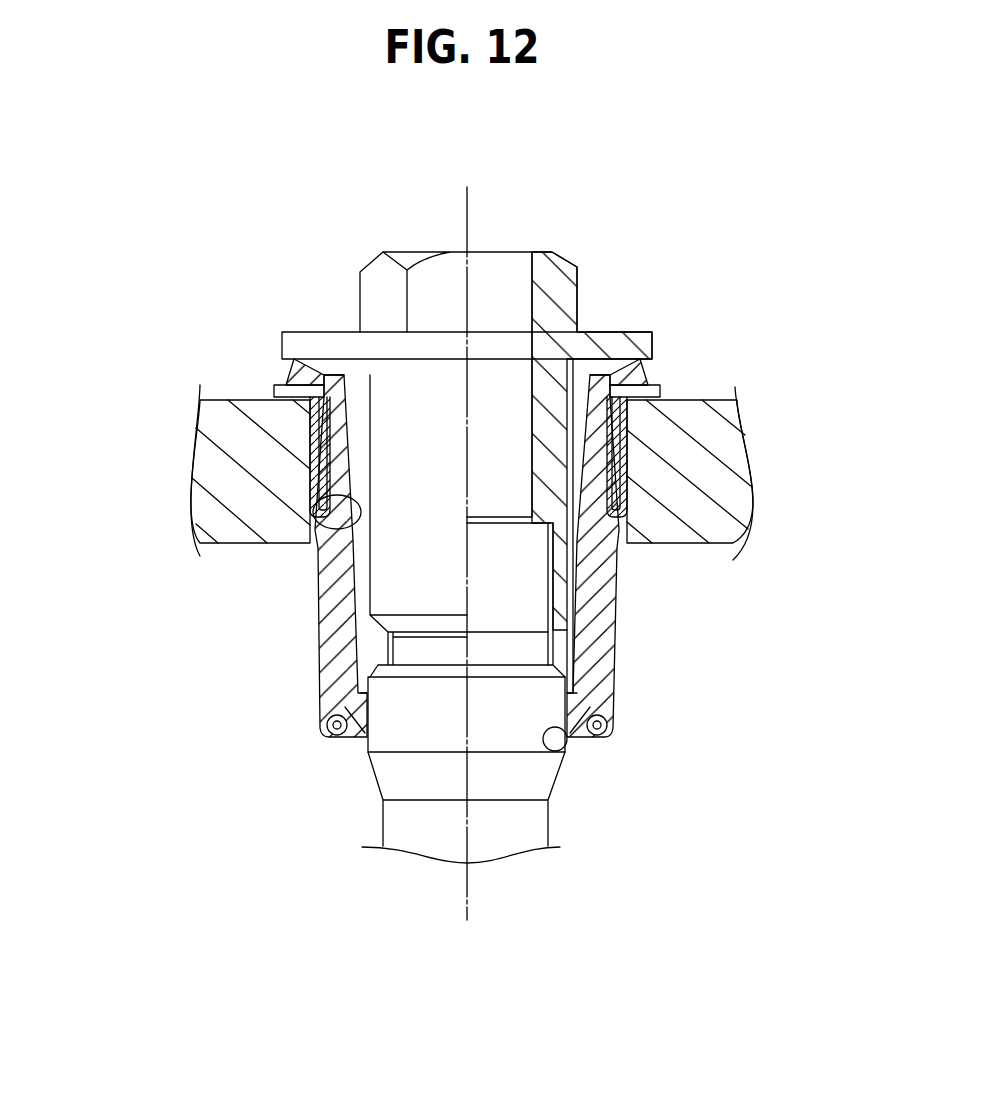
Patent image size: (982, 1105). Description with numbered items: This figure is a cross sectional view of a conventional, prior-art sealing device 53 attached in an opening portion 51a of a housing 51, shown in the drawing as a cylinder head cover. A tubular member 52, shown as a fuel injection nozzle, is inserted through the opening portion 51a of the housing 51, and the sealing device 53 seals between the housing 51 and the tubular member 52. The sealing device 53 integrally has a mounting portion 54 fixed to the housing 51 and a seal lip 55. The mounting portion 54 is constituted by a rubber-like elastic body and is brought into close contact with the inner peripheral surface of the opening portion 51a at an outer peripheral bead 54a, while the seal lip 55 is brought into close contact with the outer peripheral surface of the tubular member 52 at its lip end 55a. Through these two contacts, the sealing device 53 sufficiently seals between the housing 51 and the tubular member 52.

The housing 51 is at (215, 420).
The opening portion 51a is at (315, 528).
The tubular member 52 is at (432, 838).
The sealing device 53 is at (317, 597).
The mounting portion 54 is at (627, 425).
The outer peripheral bead 54a is at (627, 447).
The seal lip 55 is at (593, 608).
The lip end 55a is at (560, 763).